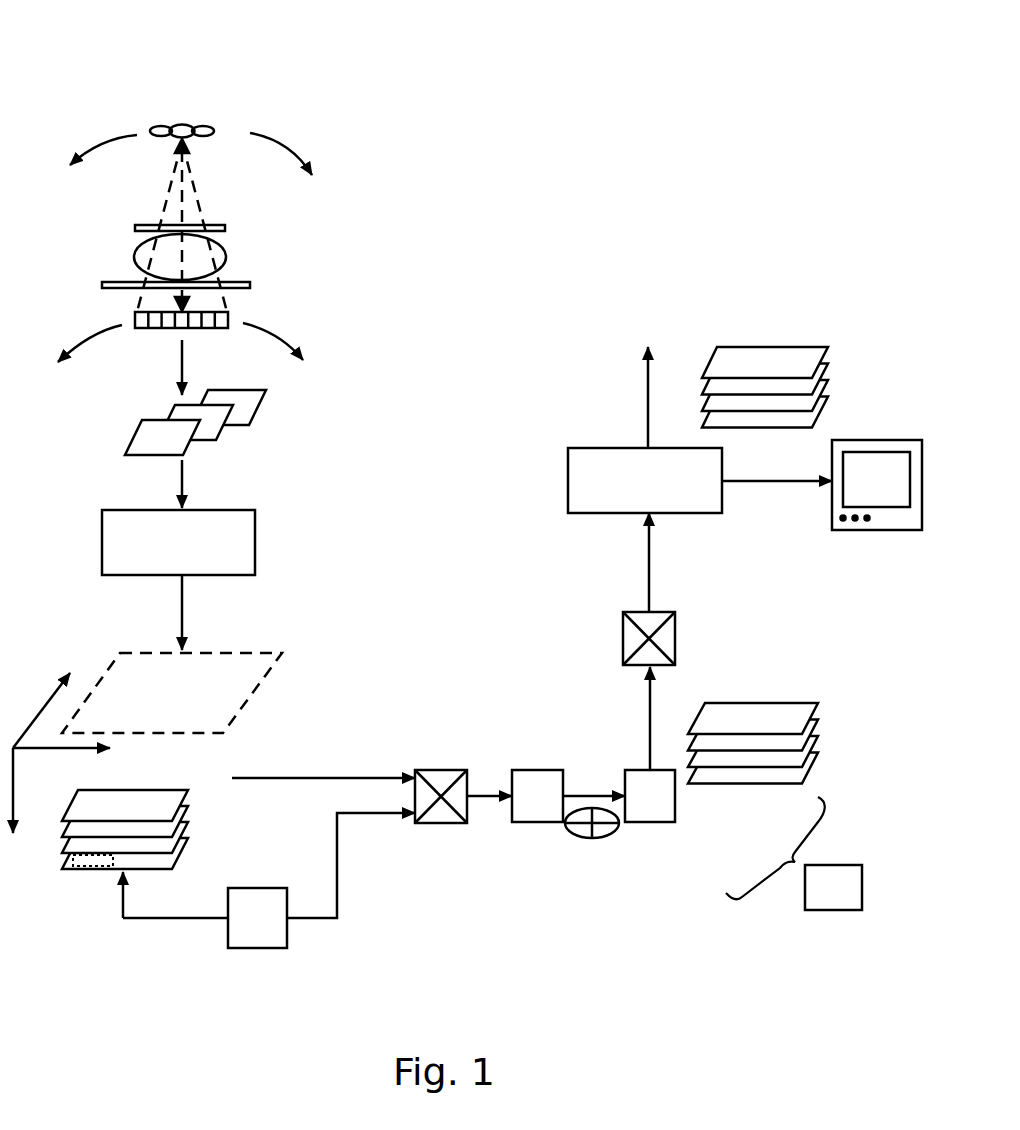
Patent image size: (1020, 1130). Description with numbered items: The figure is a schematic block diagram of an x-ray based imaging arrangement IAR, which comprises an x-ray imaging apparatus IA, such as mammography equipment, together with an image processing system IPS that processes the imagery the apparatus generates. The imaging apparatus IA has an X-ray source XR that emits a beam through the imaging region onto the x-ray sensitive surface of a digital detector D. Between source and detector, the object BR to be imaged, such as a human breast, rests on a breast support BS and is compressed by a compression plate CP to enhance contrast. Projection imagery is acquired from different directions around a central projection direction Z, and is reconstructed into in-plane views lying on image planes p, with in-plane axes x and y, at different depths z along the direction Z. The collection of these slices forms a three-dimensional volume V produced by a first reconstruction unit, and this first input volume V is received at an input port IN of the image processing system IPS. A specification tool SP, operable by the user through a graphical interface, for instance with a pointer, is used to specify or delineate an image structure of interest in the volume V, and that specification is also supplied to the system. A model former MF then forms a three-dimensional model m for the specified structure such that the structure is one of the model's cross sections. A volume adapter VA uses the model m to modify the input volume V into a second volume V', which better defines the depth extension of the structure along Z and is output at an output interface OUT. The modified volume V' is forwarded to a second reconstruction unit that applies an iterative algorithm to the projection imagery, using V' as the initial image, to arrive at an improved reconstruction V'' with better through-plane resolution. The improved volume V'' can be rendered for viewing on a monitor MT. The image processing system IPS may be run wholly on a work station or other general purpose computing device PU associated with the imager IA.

The imaging arrangement IAR is at (508, 123).
The x-ray imaging apparatus IA is at (347, 132).
The X-ray source XR is at (222, 132).
The central projection direction Z is at (195, 196).
The compression plate CP is at (230, 227).
The object to be imaged BR is at (215, 265).
The breast support BS is at (260, 278).
The specification tool SP is at (295, 337).
The X-ray sensitive detector D is at (210, 337).
The image plane p is at (252, 692).
The X axis x is at (41, 701).
The Y axis y is at (74, 760).
The depth z is at (12, 810).
The input image volume V is at (156, 824).
The image processing system IPS is at (577, 553).
The input port IN is at (436, 778).
The model former MF is at (537, 796).
The volume adapter VA is at (650, 796).
The 3D model m is at (580, 838).
The modified input volume V' is at (739, 743).
The output interface OUT is at (682, 637).
The improved reconstruction volume V'' is at (750, 387).
The monitor MT is at (858, 440).
The general purpose computing device PU is at (840, 865).